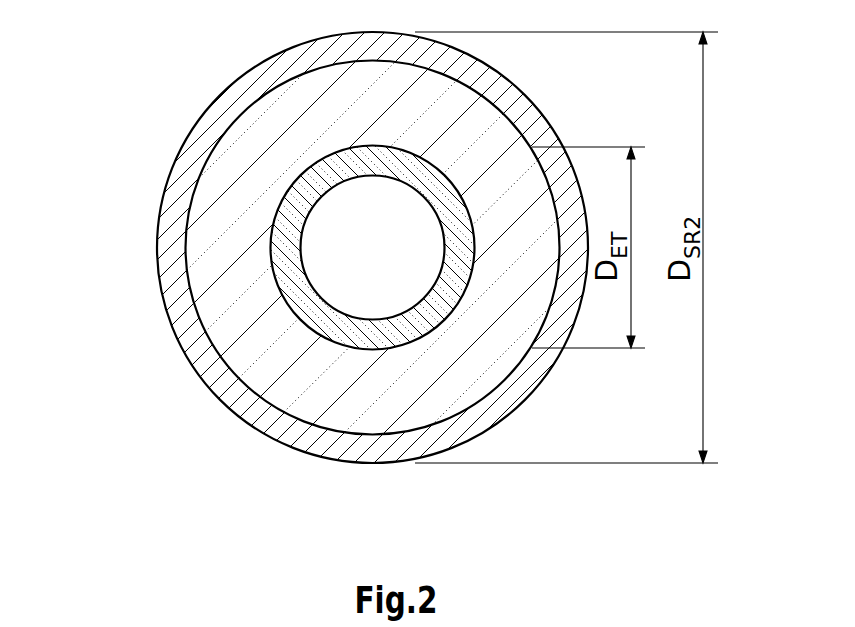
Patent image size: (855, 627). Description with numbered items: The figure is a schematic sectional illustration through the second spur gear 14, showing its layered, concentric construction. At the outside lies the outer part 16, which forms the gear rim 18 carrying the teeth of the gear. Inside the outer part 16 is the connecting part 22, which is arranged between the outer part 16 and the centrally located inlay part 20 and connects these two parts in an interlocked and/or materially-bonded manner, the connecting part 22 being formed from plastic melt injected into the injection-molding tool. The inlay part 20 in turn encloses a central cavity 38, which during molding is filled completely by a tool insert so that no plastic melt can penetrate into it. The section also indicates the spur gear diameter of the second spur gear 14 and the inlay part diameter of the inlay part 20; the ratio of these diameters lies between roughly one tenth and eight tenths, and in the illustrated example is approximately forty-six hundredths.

The second spur gear 14 is at (310, 247).
The outer part 16 is at (310, 247).
The gear rim 18 is at (172, 285).
The inlay part 20 is at (373, 340).
The connecting part 22 is at (202, 163).
The cavity 38 is at (383, 264).